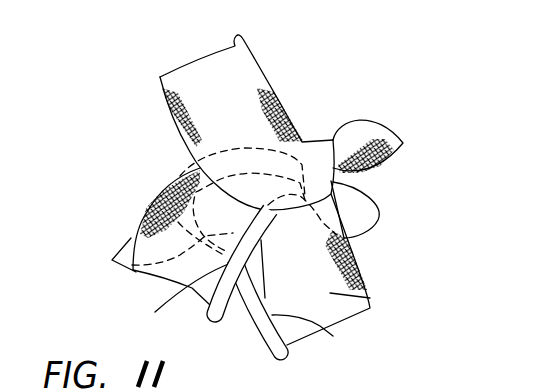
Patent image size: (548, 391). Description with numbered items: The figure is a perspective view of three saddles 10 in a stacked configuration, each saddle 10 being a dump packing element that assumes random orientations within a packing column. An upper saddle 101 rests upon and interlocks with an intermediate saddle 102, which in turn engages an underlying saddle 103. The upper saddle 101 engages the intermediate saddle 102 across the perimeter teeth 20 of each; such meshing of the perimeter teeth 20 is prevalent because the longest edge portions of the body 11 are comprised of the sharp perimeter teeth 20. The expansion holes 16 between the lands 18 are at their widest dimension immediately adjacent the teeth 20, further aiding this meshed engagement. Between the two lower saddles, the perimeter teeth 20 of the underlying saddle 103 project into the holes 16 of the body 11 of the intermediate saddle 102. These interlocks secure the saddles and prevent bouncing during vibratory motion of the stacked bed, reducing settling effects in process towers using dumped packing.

The saddle 10 is at (232, 88).
The body 11 is at (200, 62).
The expansion holes 16 is at (277, 117).
The lands 18 is at (145, 208).
The perimeter teeth 20 is at (177, 182).
The upper saddle 101 is at (160, 77).
The intermediate saddle 102 is at (138, 273).
The underlying saddle 103 is at (360, 262).